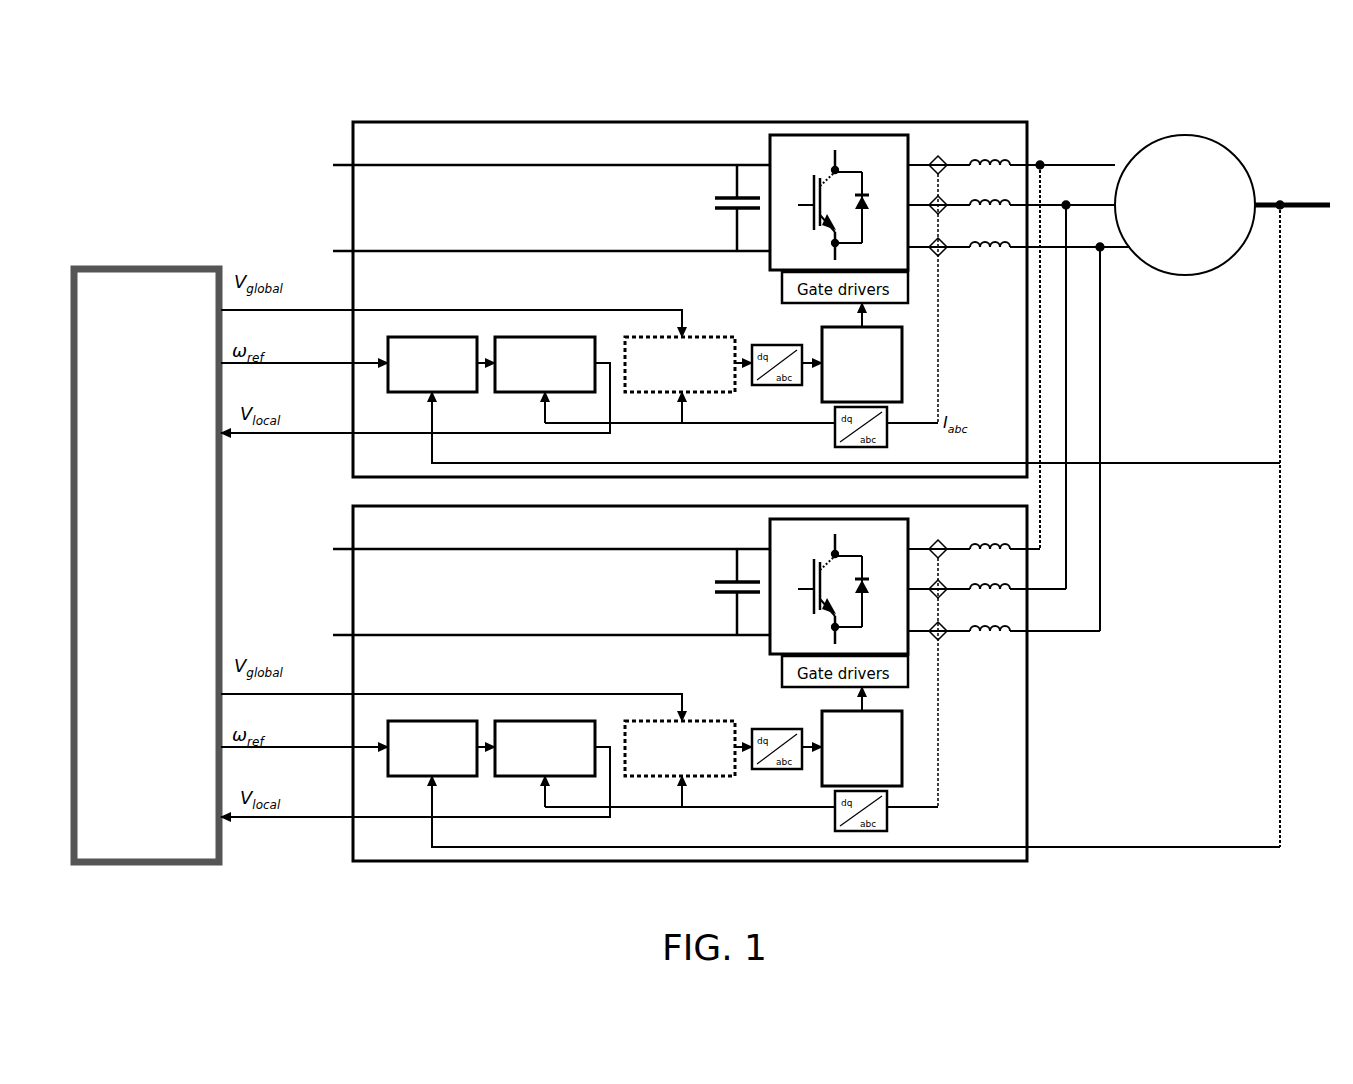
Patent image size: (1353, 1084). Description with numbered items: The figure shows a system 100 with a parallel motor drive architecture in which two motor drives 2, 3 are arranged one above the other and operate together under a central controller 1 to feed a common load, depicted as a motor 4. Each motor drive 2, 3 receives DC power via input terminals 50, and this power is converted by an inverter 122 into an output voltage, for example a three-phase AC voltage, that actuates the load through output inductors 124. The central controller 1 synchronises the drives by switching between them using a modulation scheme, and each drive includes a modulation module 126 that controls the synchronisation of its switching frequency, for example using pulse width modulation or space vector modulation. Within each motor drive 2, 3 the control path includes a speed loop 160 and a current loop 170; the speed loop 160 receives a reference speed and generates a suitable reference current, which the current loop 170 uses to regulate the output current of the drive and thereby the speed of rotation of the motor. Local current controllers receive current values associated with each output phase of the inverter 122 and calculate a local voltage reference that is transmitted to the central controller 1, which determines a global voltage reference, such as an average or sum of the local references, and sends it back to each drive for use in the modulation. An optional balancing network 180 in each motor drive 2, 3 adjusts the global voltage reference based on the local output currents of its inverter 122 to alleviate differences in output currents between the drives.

The system 100 is at (1200, 92).
The central controller 1 is at (146, 565).
The motor drive 2 is at (395, 132).
The motor drive 3 is at (381, 841).
The motor 4 is at (1222, 205).
The input terminals 50 is at (313, 212).
The inverter 122 is at (860, 153).
The output inductors 124 is at (1000, 155).
The modulation module 126 is at (862, 556).
The speed loop 160 is at (432, 556).
The current loop 170 is at (545, 556).
The balancing network 180 is at (680, 556).